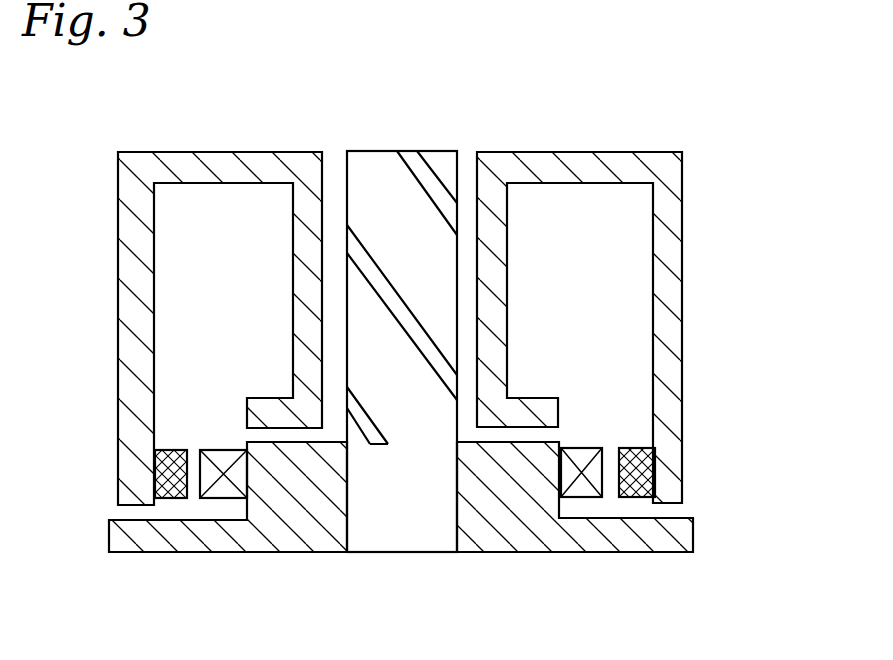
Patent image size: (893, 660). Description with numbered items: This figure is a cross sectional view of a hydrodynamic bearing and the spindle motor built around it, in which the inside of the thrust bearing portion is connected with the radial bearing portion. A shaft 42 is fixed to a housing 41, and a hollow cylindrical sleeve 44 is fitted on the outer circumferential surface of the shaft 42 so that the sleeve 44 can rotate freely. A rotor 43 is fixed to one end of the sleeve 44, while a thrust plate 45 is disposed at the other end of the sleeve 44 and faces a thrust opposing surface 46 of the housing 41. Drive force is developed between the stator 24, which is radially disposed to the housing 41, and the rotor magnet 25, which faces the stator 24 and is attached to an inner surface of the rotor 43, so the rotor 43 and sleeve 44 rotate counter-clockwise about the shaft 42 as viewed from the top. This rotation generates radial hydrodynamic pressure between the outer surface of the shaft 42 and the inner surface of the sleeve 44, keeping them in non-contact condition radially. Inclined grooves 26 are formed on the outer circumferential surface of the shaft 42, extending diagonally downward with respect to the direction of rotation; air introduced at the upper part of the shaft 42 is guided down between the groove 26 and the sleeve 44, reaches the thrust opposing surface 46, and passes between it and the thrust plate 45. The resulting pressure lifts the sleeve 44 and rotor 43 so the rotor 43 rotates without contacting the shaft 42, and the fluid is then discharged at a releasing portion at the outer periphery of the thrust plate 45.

The stator 24 is at (583, 452).
The rotor magnet 25 is at (633, 477).
The inclined groove 26 is at (405, 303).
The housing 41 is at (242, 538).
The shaft 42 is at (405, 520).
The rotor 43 is at (543, 166).
The sleeve 44 is at (308, 246).
The thrust plate 45 is at (273, 410).
The thrust opposing surface 46 is at (270, 441).